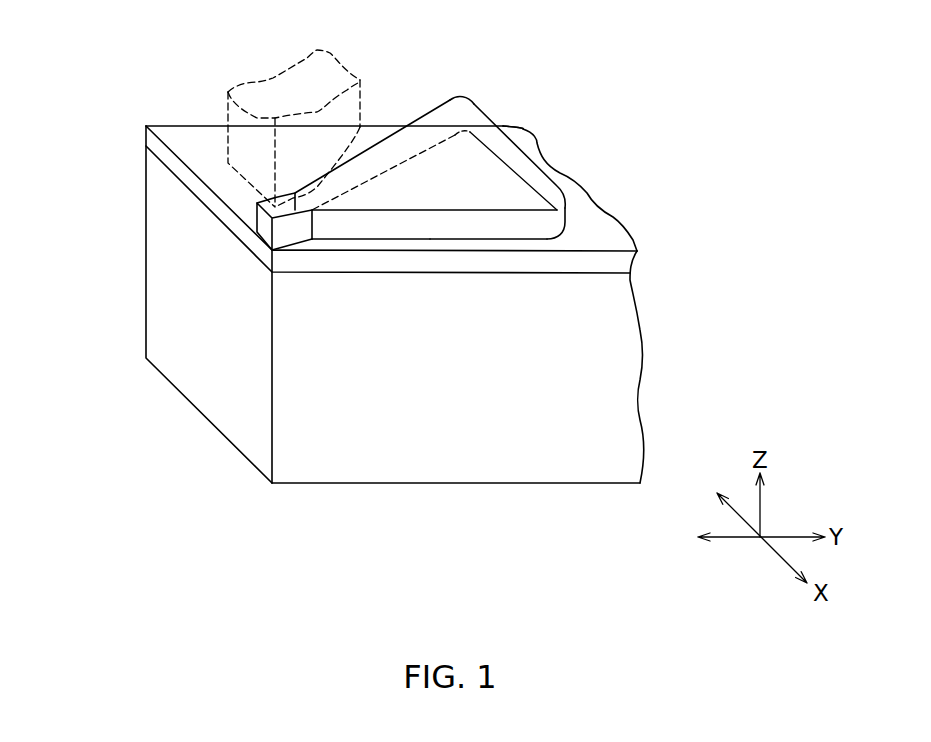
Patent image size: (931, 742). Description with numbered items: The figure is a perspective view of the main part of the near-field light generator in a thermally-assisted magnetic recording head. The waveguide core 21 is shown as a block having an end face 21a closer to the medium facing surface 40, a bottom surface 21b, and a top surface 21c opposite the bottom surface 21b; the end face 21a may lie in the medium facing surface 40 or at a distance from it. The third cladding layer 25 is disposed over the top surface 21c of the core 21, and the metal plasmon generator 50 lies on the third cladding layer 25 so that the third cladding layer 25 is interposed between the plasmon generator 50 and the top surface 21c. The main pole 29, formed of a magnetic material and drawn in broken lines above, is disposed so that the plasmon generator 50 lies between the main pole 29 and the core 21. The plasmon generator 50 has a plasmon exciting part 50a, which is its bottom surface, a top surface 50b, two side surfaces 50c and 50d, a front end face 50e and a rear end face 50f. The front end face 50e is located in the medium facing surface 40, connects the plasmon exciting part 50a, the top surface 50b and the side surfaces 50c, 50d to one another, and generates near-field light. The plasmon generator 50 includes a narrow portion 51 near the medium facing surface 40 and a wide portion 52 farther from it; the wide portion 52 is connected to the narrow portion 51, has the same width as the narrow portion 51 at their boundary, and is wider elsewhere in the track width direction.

The core 21 is at (630, 371).
The end face 21a is at (165, 258).
The bottom surface 21b is at (602, 484).
The top surface 21c is at (605, 273).
The third cladding layer 25 is at (625, 228).
The main pole 29 is at (292, 75).
The medium facing surface 40 is at (168, 319).
The plasmon generator 50 is at (320, 323).
The plasmon exciting part 50a is at (455, 230).
The top surface 50b is at (457, 143).
The side surface 50c is at (390, 152).
The side surface 50d is at (502, 230).
The front end face 50e is at (290, 213).
The rear end face 50f is at (532, 137).
The narrow portion 51 is at (308, 254).
The wide portion 52 is at (381, 252).